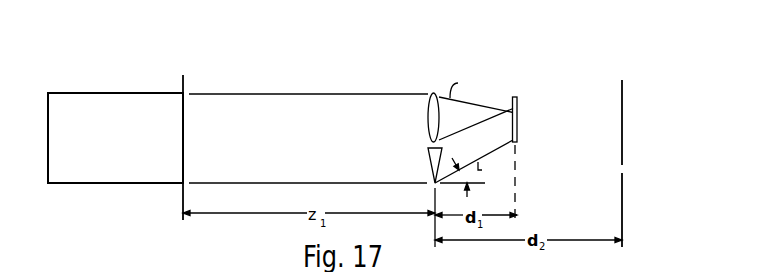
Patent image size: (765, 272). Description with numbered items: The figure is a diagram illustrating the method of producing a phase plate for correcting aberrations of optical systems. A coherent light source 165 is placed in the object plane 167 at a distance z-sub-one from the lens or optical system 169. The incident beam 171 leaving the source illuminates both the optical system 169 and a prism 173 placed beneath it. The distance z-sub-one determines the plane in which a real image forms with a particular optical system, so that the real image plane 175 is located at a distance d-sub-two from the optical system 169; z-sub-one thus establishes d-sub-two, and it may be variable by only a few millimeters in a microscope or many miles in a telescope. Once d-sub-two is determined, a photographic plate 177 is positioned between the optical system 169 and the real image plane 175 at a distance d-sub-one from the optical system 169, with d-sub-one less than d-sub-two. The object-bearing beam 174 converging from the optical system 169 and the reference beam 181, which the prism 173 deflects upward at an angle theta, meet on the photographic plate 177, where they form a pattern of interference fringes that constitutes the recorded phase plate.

The coherent light source 165 is at (113, 92).
The object plane 167 is at (183, 80).
The incident beam 171 is at (222, 93).
The optical system 169 is at (428, 122).
The prism 173 is at (428, 163).
The reference beam 181 is at (480, 122).
The object-bearing beam 174 is at (518, 110).
The photographic plate 177 is at (518, 128).
The real image plane 175 is at (623, 118).